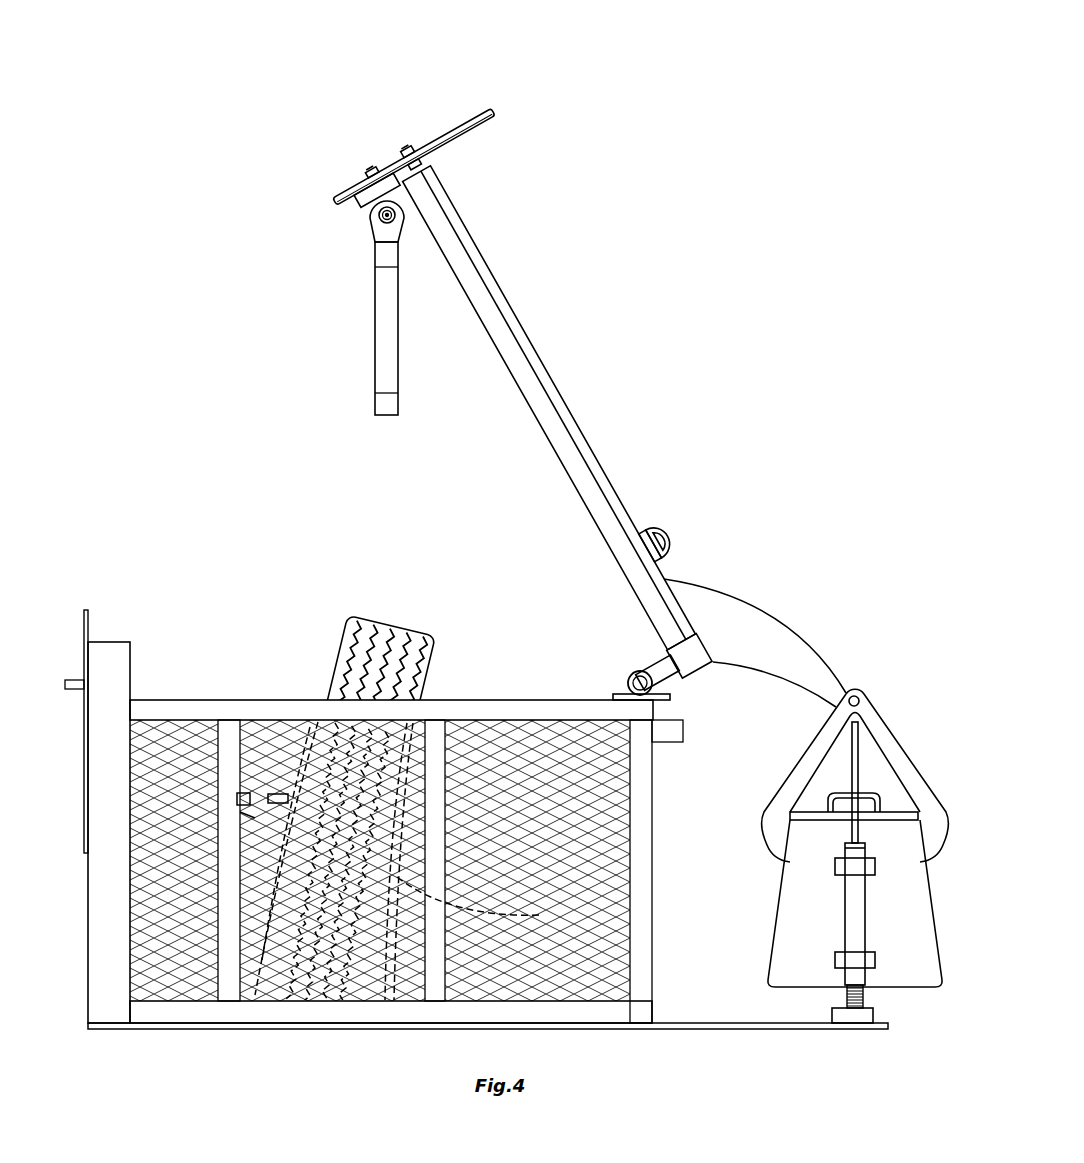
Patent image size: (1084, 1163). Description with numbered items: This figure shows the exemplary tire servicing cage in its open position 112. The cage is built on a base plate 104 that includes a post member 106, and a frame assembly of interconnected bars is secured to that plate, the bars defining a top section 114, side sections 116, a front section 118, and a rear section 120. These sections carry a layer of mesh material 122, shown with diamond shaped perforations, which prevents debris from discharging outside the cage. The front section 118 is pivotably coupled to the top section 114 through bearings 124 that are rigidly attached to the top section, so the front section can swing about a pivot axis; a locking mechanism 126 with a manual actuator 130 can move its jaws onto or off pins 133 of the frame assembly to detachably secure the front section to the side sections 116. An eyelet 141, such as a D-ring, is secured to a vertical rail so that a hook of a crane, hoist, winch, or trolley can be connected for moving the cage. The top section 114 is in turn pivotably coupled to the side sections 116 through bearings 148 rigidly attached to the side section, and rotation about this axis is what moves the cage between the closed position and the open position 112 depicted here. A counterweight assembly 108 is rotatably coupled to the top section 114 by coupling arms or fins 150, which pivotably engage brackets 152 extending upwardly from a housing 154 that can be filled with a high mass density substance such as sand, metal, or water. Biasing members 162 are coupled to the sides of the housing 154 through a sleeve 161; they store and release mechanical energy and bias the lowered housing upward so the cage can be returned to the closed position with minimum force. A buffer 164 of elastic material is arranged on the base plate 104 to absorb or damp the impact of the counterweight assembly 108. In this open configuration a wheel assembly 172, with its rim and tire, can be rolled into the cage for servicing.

The base plate 104 is at (190, 1030).
The post member 106 is at (368, 978).
The counterweight assembly 108 is at (833, 848).
The open position 112 is at (176, 422).
The top section 114 is at (528, 374).
The side sections 116 is at (108, 1000).
The front section 118 is at (380, 342).
The rear section 120 is at (668, 742).
The mesh material 122 is at (176, 745).
The bearings 124 is at (372, 222).
The locking mechanism 126 is at (434, 133).
The manual actuator 130 is at (497, 112).
The pins 133 is at (74, 680).
The eyelets 141 is at (684, 522).
The bearings 148 is at (630, 680).
The fins 150 is at (770, 632).
The brackets 152 is at (892, 737).
The housing 154 is at (796, 908).
The sleeve 161 is at (850, 930).
The biasing members 162 is at (842, 998).
The buffers 164 is at (876, 1016).
The wheel assembly 172 is at (348, 610).